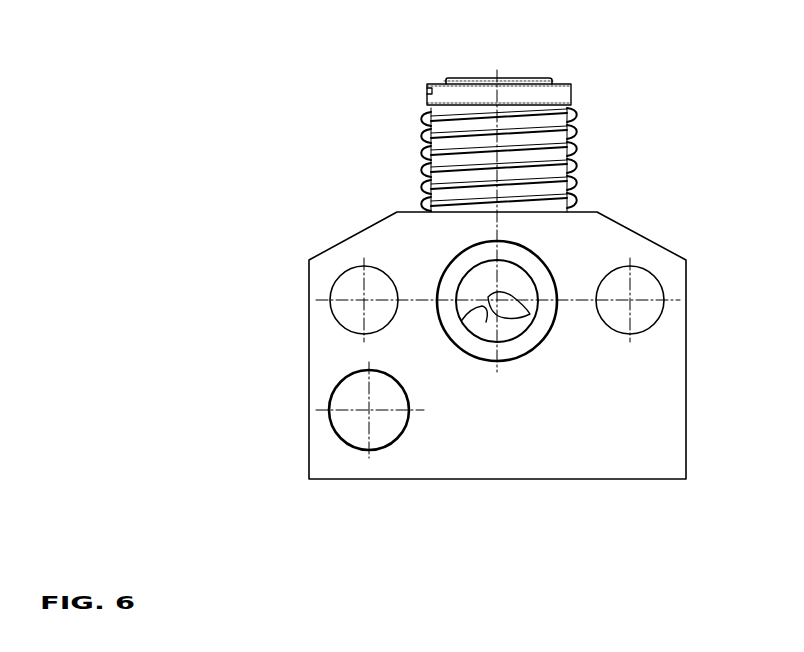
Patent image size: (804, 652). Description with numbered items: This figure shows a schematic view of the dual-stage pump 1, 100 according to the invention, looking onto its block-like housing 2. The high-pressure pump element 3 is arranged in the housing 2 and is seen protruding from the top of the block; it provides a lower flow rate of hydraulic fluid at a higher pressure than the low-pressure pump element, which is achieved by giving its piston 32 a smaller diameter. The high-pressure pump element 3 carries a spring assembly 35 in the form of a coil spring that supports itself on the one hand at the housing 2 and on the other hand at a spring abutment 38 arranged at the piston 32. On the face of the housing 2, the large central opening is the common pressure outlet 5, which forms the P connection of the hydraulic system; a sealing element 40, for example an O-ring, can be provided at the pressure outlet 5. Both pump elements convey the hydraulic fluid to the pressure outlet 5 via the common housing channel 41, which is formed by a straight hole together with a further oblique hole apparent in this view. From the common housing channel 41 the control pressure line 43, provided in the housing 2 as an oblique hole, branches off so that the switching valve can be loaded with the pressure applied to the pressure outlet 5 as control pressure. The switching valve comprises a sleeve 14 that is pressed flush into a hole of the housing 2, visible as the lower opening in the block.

The dual-stage pump 1 is at (218, 156).
The dual-stage pump 100 is at (473, 252).
The housing 2 is at (320, 365).
The high-pressure pump element 3 is at (412, 110).
The pressure outlet 5 is at (508, 280).
The sleeve 14 is at (348, 425).
The piston 32 is at (458, 76).
The spring assembly 35 is at (566, 150).
The spring abutment 38 is at (560, 95).
The sealing element 40 is at (463, 262).
The common housing channel 41 is at (518, 312).
The control pressure line 43 is at (492, 310).